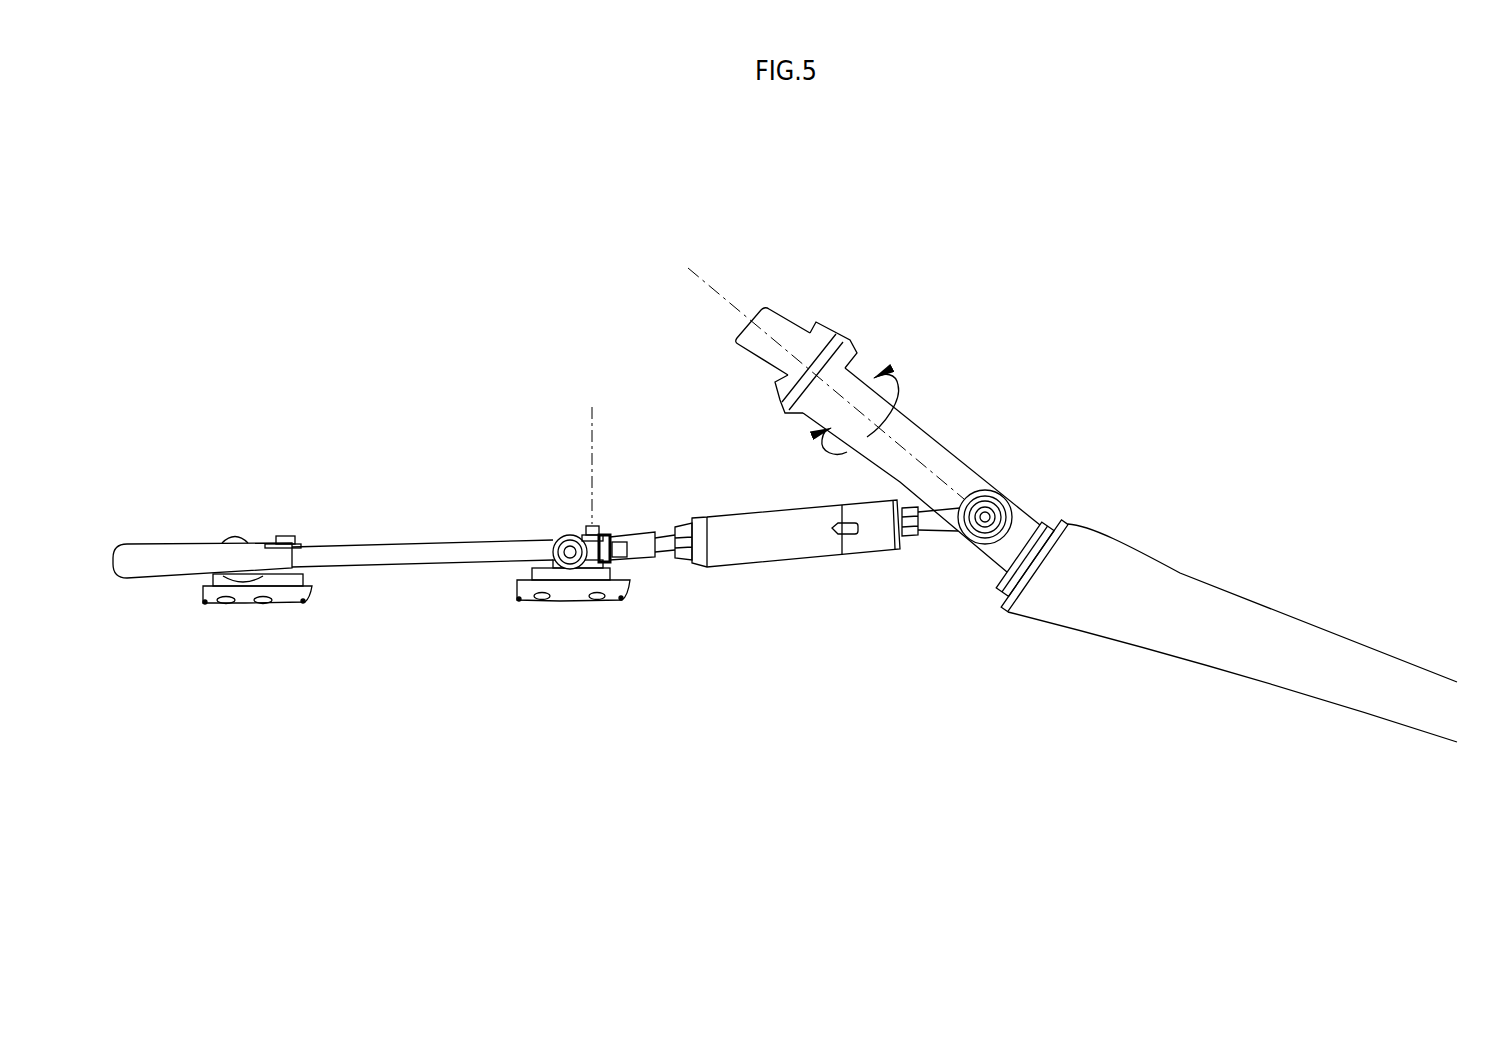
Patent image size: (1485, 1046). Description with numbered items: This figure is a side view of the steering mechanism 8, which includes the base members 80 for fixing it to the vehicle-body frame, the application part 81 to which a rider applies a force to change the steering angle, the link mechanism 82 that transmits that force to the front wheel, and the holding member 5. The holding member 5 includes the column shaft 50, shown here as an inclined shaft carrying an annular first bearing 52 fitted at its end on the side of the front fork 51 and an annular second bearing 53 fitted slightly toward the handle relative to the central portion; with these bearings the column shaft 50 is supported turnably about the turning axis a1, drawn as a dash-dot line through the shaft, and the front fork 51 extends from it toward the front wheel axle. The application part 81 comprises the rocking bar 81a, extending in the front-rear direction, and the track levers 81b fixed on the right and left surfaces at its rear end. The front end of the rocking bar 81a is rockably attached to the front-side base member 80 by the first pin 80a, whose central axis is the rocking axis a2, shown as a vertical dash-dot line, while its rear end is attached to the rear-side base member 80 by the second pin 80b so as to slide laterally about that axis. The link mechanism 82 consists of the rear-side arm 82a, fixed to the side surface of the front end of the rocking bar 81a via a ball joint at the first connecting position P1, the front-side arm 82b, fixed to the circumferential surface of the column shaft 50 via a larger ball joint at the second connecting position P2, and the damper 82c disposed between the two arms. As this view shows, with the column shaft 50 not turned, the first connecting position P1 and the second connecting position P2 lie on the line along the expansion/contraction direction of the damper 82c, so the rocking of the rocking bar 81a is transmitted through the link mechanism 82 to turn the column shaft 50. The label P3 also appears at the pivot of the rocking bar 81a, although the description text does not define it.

The holding member 5 is at (1156, 443).
The steering mechanism 8 is at (477, 418).
The column shaft 50 is at (777, 315).
The front fork 51 is at (1167, 572).
The first bearing 52 is at (1073, 518).
The second bearing 53 is at (837, 337).
The base member 80 is at (247, 603).
The first pin 80a is at (597, 521).
The second pin 80b is at (288, 534).
The application part 81 is at (393, 528).
The rocking bar 81a is at (423, 563).
The track lever 81b is at (135, 573).
The link mechanism 82 is at (781, 573).
The rear-side arm 82a is at (644, 557).
The front-side arm 82b is at (934, 534).
The damper 82c is at (720, 560).
The first connecting position P1 is at (563, 528).
The second connecting position P2 is at (998, 483).
The pivot point P3 is at (590, 520).
The turning axis a1 is at (705, 278).
The rocking axis a2 is at (593, 447).